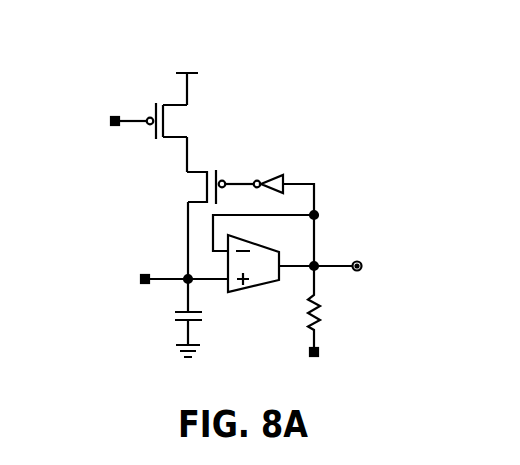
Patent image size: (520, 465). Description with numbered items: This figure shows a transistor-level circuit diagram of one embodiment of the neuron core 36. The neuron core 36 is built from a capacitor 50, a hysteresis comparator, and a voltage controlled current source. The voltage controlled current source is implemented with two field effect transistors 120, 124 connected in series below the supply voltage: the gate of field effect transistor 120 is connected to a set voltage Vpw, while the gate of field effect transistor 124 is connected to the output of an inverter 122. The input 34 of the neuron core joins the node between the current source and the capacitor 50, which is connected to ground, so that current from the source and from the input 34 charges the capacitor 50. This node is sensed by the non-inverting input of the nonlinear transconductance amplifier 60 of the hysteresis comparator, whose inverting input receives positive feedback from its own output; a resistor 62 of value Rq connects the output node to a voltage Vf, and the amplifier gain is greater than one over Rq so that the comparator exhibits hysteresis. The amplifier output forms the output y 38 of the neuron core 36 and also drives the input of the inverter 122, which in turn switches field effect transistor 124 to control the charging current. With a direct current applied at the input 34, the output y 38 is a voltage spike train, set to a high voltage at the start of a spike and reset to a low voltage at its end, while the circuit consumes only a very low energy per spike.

The neuron core 36 is at (277, 82).
The field effect transistor 120 is at (158, 102).
The field effect transistor 124 is at (183, 198).
The inverter 122 is at (282, 168).
The input 34 is at (170, 283).
The capacitor 50 is at (175, 325).
The nonlinear transconductance amplifier 60 is at (243, 290).
The output y 38 is at (328, 262).
The resistor 62 is at (325, 320).